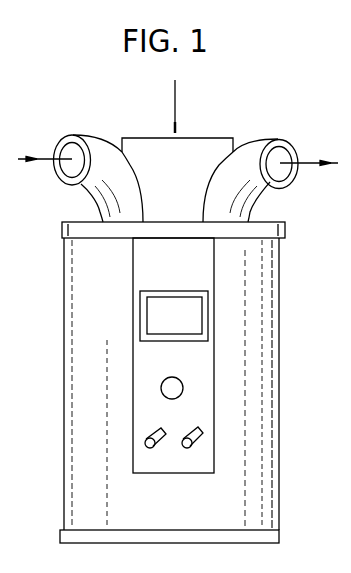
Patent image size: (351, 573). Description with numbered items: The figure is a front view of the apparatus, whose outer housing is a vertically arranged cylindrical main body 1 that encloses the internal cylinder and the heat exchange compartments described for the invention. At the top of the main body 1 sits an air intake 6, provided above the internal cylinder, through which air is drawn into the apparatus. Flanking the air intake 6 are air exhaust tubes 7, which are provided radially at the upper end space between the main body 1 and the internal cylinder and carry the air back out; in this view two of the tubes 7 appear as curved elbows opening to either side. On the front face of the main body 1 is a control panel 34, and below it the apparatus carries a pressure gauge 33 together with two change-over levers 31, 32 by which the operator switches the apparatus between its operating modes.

The main body 1 is at (72, 410).
The air intake 6 is at (199, 147).
The air exhaust tubes 7 is at (95, 138).
The change-over lever 31 is at (155, 433).
The change-over lever 32 is at (192, 431).
The pressure gauge 33 is at (176, 378).
The control panel 34 is at (170, 305).